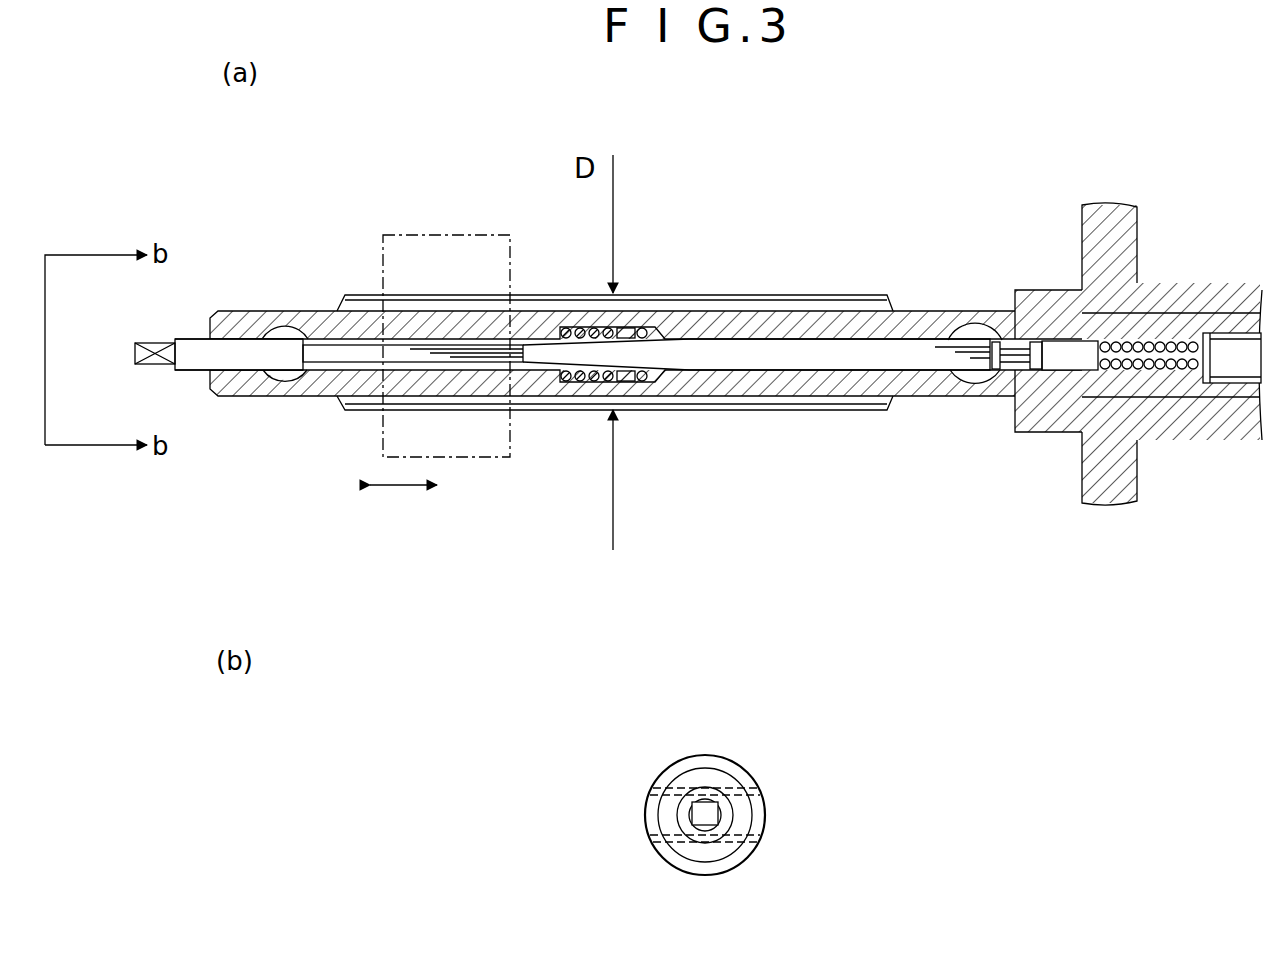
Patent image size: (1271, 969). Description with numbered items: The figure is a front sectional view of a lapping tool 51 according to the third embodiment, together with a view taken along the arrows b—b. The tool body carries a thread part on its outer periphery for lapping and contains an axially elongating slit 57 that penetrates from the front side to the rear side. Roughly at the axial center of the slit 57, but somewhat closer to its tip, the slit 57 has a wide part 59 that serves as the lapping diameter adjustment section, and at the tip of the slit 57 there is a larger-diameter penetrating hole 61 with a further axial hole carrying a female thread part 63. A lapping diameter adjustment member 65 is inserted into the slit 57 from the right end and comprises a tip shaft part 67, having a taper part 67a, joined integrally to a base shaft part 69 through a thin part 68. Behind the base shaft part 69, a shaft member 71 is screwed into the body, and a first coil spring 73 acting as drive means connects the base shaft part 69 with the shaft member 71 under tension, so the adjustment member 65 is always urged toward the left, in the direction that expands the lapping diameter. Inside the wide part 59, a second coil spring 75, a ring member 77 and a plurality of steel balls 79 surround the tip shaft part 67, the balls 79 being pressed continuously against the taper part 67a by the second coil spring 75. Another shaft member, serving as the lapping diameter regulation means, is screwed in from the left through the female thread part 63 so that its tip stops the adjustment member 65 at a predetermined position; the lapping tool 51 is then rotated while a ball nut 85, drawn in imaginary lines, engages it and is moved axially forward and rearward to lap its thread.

The lapping tool 51 is at (537, 290).
The slit 57 is at (1015, 432).
The wide part 59 is at (690, 397).
The penetrating hole 61 is at (292, 322).
The female thread part 63 is at (240, 355).
The lapping diameter adjustment member 65 is at (878, 378).
The tip shaft part 67 is at (826, 364).
The taper part 67a is at (580, 383).
The thin part 68 is at (1018, 358).
The base shaft part 69 is at (1070, 362).
The shaft member 71 is at (1238, 366).
The first coil spring 73 is at (1165, 378).
The second coil spring 75 is at (560, 397).
The ring member 77 is at (618, 385).
The steel balls 79 is at (645, 390).
The ball nut 85 is at (462, 232).